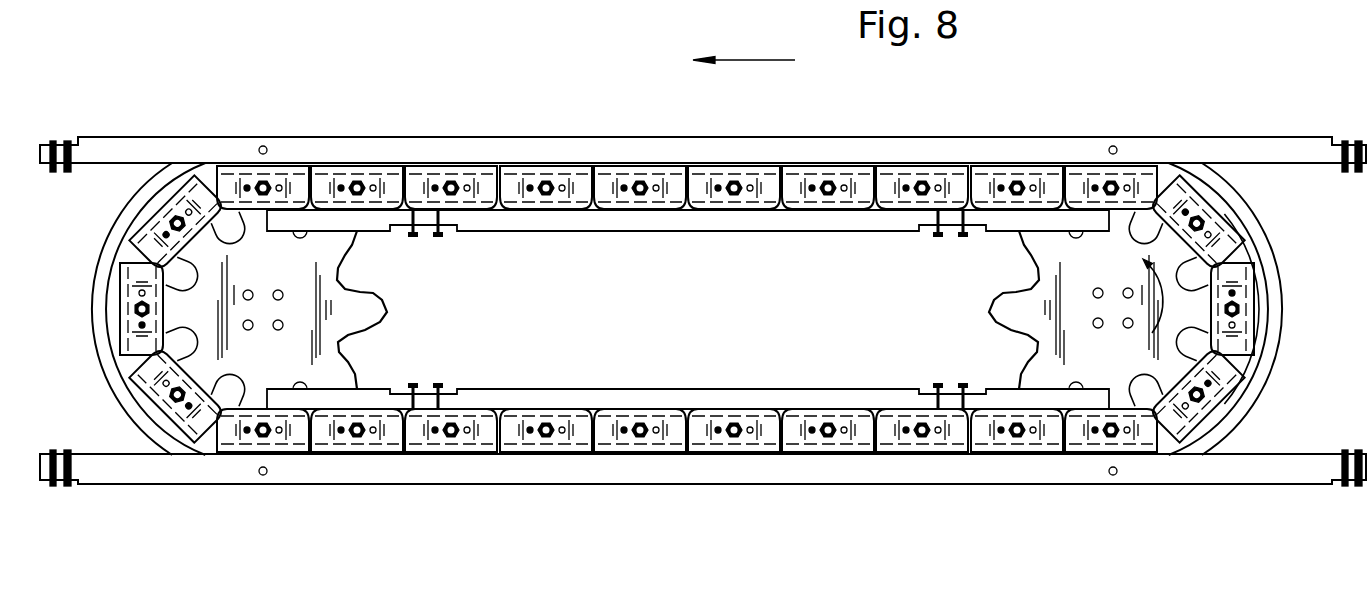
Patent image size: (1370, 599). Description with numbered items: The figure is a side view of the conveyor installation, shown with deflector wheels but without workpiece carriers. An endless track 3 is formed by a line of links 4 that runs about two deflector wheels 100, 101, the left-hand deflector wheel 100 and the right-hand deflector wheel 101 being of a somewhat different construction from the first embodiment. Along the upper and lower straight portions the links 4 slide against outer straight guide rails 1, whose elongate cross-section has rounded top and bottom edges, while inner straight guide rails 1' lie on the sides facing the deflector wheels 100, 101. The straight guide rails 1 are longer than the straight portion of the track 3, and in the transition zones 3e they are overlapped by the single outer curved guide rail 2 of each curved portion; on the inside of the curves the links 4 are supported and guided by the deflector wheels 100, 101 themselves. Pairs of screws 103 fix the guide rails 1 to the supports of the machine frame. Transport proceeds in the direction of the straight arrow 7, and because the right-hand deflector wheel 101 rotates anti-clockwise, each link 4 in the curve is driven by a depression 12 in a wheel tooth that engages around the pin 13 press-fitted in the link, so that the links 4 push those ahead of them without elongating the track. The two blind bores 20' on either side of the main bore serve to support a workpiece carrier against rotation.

The straight guide rail 1 is at (703, 311).
The inner straight guide rail 1' is at (688, 310).
The curved guide rail 2 is at (100, 288).
The track 3 is at (687, 313).
The transition zone 3e is at (288, 116).
The link 4 is at (666, 211).
The direction of transport arrow 7 is at (768, 58).
The depression 12 is at (386, 311).
The pin 13 is at (549, 186).
The blind bore 20' is at (451, 143).
The deflector wheel 100 is at (320, 338).
The right-hand deflector wheel 101 is at (1023, 320).
The screws 103 is at (66, 141).